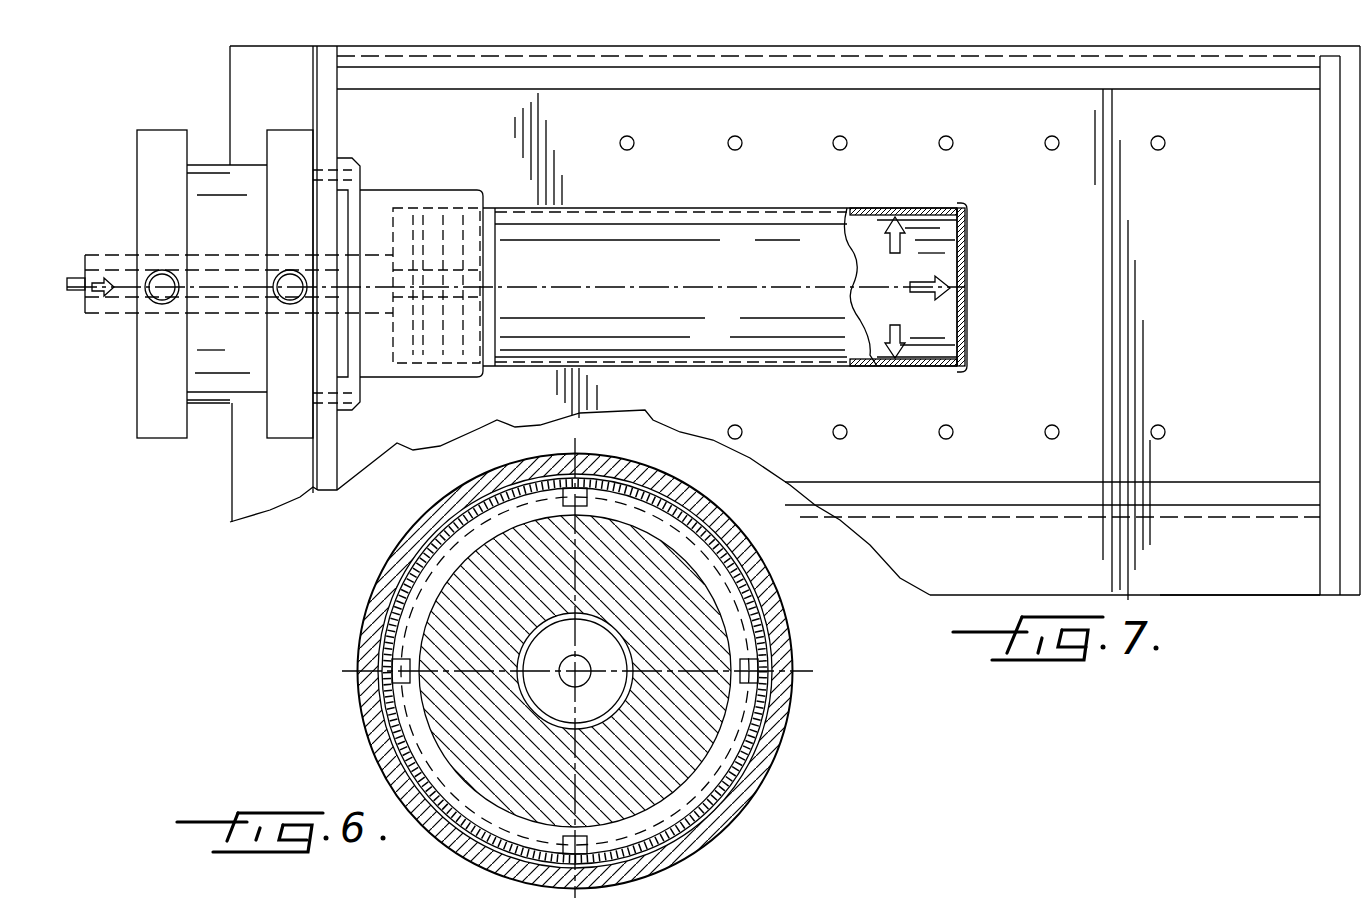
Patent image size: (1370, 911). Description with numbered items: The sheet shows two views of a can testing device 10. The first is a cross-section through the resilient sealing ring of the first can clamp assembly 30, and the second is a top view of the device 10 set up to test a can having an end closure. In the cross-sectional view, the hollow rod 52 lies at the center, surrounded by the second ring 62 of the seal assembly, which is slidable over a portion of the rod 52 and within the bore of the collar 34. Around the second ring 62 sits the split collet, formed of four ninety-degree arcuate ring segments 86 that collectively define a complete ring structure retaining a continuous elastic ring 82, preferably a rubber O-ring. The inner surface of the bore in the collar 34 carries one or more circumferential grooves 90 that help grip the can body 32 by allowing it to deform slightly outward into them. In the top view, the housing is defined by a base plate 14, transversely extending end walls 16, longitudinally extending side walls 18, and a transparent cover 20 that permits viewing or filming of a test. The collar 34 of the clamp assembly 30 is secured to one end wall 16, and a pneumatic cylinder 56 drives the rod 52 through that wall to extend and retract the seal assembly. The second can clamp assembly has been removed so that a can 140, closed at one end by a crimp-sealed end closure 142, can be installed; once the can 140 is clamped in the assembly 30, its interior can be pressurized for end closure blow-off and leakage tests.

In FIG. 7, the can testing device 10 is at (1288, 600).
In FIG. 7, the base plate 14 is at (1352, 378).
In FIG. 7, the end wall 16 is at (313, 103).
In FIG. 7, the side wall 18 is at (780, 90).
In FIG. 7, the transparent cover 20 is at (1220, 515).
In FIG. 7, the first can clamp assembly 30 is at (462, 175).
In FIG. 7, the pneumatic cylinder 56 is at (200, 215).
In FIG. 7, the can 140 is at (697, 218).
In FIG. 7, the crimp-sealed end closure 142 is at (967, 265).
In FIG. 6, the can body 32 is at (768, 716).
In FIG. 6, the collar 34 is at (783, 648).
In FIG. 6, the hollow rod 52 is at (550, 708).
In FIG. 6, the second ring 62 is at (437, 622).
In FIG. 6, the elastic ring 82 is at (735, 795).
In FIG. 6, the arcuate ring segments 86 is at (610, 505).
In FIG. 6, the circumferential grooves 90 is at (713, 835).